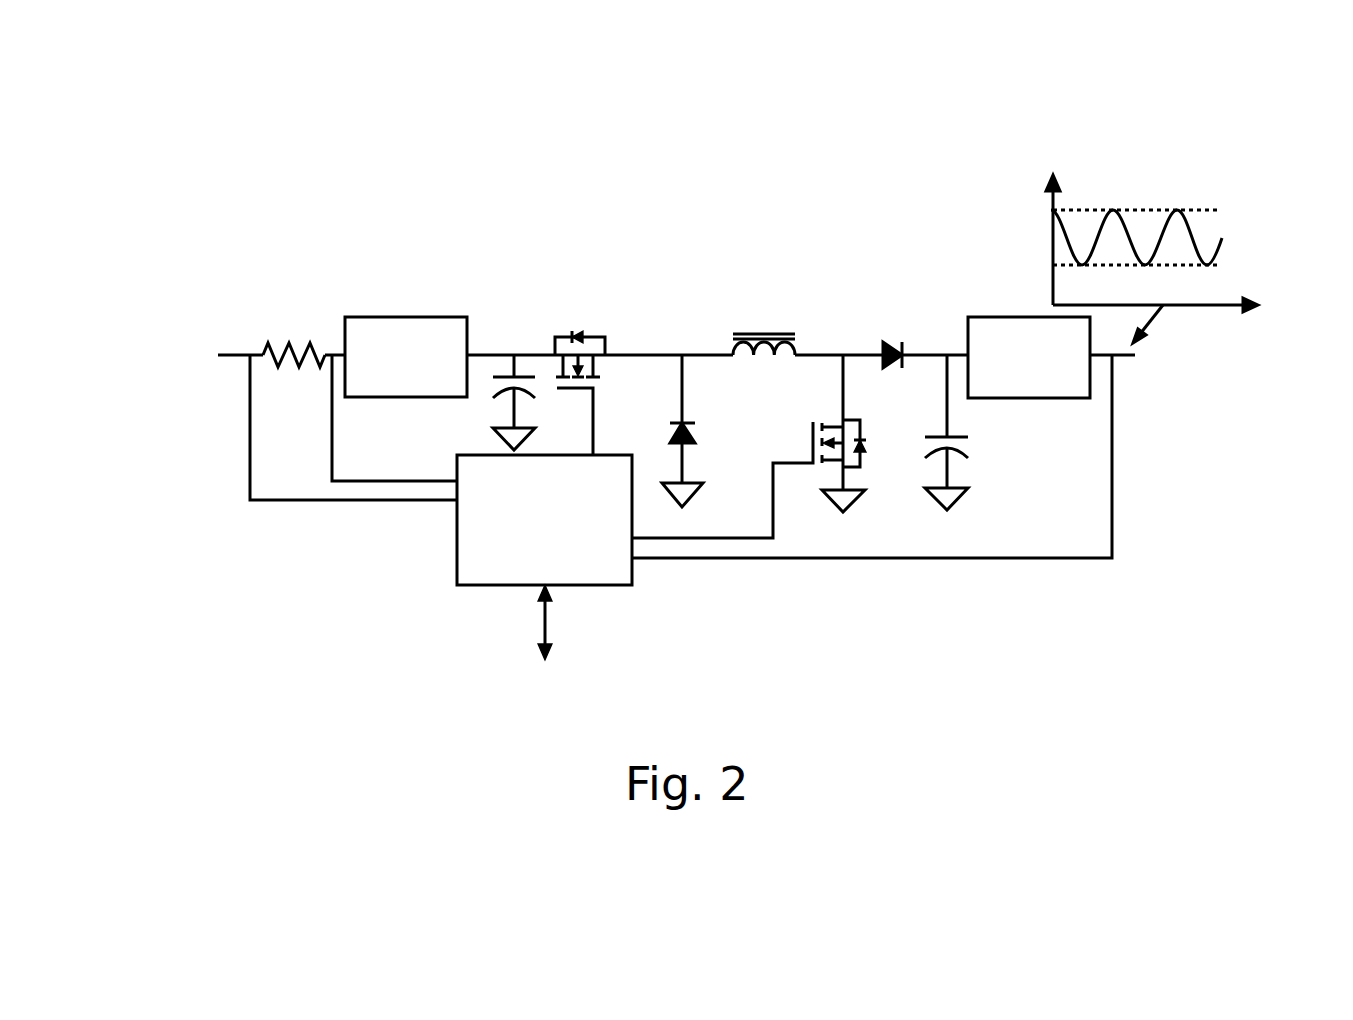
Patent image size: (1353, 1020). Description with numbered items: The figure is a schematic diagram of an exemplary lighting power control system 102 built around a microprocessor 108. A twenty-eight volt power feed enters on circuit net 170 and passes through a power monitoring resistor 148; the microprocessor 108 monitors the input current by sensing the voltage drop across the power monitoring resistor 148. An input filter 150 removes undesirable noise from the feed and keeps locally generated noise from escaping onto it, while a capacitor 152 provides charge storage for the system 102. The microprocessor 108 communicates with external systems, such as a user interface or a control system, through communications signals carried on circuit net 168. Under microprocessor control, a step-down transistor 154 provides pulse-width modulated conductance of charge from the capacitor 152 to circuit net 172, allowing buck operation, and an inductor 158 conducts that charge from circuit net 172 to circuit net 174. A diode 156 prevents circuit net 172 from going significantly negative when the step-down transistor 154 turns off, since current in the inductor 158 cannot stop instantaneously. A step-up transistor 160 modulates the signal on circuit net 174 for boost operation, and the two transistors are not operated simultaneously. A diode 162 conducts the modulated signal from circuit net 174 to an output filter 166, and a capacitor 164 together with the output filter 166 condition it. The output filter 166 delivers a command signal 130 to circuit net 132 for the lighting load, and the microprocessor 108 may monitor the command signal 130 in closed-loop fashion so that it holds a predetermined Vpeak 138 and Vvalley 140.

The lighting power control system 102 is at (505, 225).
The microprocessor 108 is at (598, 585).
The command signal 130 is at (1135, 180).
The circuit net 132 is at (1112, 522).
The Vpeak 138 is at (1197, 210).
The Vvalley 140 is at (1180, 267).
The power monitoring resistor 148 is at (265, 353).
The input filter 150 is at (410, 315).
The capacitor 152 is at (500, 355).
The step-down transistor 154 is at (612, 320).
The diode 156 is at (693, 437).
The inductor 158 is at (772, 337).
The step-up transistor 160 is at (876, 465).
The diode 162 is at (888, 343).
The capacitor 164 is at (960, 425).
The output filter 166 is at (967, 335).
The circuit net 168 is at (538, 628).
The circuit net 170 is at (235, 365).
The circuit net 172 is at (660, 355).
The circuit net 174 is at (813, 353).